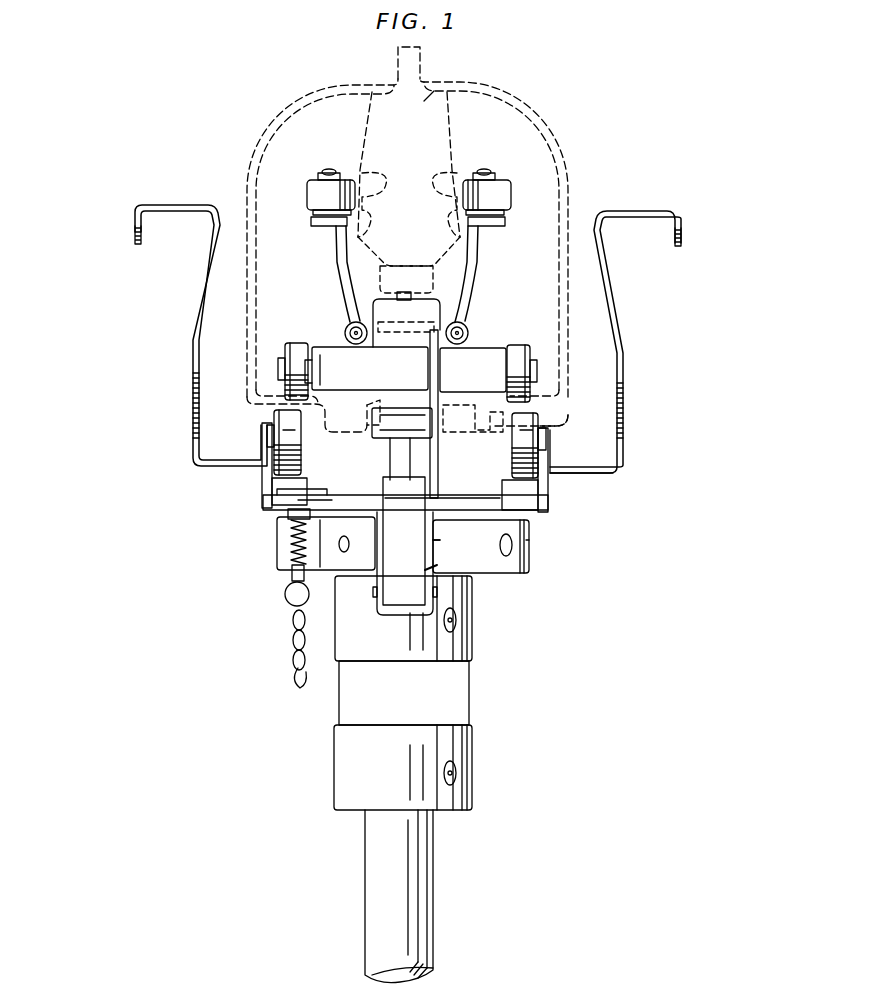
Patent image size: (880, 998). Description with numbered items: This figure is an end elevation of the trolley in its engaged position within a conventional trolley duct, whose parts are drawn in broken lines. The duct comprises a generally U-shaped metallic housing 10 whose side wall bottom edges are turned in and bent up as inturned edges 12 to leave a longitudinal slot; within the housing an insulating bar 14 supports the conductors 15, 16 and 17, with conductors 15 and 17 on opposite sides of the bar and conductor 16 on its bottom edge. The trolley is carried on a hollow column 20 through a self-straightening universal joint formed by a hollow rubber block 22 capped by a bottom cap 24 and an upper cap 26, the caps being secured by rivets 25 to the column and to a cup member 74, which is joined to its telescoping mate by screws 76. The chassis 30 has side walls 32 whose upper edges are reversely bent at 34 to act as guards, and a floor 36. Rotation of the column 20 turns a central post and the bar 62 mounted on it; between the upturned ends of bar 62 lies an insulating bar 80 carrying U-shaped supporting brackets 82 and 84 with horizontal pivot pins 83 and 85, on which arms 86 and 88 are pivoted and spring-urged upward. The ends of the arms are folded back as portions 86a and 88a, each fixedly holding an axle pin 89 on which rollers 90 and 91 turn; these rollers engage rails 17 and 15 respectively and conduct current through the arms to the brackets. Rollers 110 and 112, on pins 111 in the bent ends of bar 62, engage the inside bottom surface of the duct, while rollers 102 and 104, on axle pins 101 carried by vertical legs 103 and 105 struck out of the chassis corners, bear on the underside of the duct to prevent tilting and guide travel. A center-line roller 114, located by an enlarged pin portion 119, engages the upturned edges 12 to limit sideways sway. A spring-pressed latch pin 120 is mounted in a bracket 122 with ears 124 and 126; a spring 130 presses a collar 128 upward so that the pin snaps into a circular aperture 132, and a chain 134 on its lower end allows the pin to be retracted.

The metallic housing 10 is at (560, 156).
The inturned edges 12 is at (350, 416).
The insulating bar 14 is at (435, 90).
The conductor 15 is at (368, 176).
The conductor 16 is at (403, 262).
The conductor 17 is at (455, 176).
The column 20 is at (415, 898).
The block of rubber 22 is at (470, 697).
The bottom cap 24 is at (468, 803).
The rivets 25 is at (456, 768).
The upper cap 26 is at (462, 626).
The chassis 30 is at (565, 465).
The side walls 32 is at (195, 318).
The reversely bent edges 34 is at (137, 240).
The floor 36 is at (540, 507).
The bar 62 is at (333, 383).
The cup member 74 is at (526, 565).
The screws 76 is at (437, 563).
The bar of insulating material 80 is at (485, 372).
The supporting bracket 82 is at (467, 338).
The pivot pin 83 is at (465, 328).
The supporting bracket 84 is at (350, 323).
The pivot pin 85 is at (349, 330).
The arm 86 is at (473, 262).
The folded portion 86a is at (505, 222).
The arm 88 is at (340, 258).
The folded portion 88a is at (311, 222).
The axle pin 89 is at (329, 170).
The roller 90 is at (508, 188).
The roller 91 is at (318, 188).
The axle pins 101 is at (268, 455).
The roller 102 is at (530, 440).
The vertical leg 103 is at (267, 433).
The roller 104 is at (290, 420).
The vertical leg 105 is at (560, 422).
The roller 110 is at (522, 353).
The pins 111 is at (280, 370).
The roller 112 is at (296, 353).
The roller 114 is at (383, 428).
The enlarged lower portion 119 is at (412, 465).
The latch pin 120 is at (290, 600).
The bracket 122 is at (292, 560).
The ear 124 is at (292, 551).
The lower ear 126 is at (287, 580).
The collar 128 is at (333, 525).
The spring 130 is at (298, 545).
The circular aperture 132 is at (298, 507).
The chain 134 is at (293, 675).